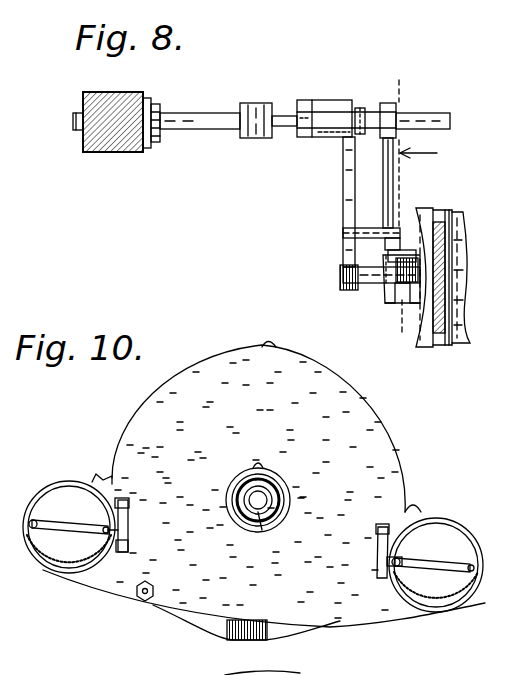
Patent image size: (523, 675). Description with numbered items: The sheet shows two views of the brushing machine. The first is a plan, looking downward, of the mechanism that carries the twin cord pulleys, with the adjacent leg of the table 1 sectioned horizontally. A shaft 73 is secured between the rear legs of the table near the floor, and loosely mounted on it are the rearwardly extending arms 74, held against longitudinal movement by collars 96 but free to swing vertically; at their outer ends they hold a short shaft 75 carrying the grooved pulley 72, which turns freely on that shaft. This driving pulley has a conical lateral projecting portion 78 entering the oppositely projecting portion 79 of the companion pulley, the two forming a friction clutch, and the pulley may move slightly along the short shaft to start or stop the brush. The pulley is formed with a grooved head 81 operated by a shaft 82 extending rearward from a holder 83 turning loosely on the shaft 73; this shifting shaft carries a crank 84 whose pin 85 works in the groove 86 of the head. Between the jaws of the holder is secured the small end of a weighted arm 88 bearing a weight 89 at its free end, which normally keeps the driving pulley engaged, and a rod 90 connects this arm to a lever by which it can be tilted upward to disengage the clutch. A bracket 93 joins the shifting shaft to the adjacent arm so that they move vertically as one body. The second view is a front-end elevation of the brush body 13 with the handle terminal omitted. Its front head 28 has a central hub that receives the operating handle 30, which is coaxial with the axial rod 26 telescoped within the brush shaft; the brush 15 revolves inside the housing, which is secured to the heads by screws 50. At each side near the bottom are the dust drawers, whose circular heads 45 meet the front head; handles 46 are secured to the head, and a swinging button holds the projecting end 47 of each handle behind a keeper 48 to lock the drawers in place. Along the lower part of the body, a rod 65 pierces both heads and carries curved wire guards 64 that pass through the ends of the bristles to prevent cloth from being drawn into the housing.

In FIG. 8, the table 1 is at (120, 92).
In FIG. 8, the shaft 73 is at (205, 115).
In FIG. 8, the weight 89 is at (262, 102).
In FIG. 8, the collar 96 is at (303, 100).
In FIG. 8, the weighted arm 88 is at (336, 118).
In FIG. 8, the rod 90 is at (359, 108).
In FIG. 8, the holder 83 is at (388, 103).
In FIG. 8, the arm 74 is at (343, 190).
In FIG. 8, the shaft 82 is at (394, 176).
In FIG. 8, the bracket 93 is at (358, 230).
In FIG. 8, the crank 84 is at (385, 244).
In FIG. 8, the pin 85 is at (388, 257).
In FIG. 8, the short shaft 75 is at (348, 277).
In FIG. 8, the groove 86 is at (384, 284).
In FIG. 8, the grooved head 81 is at (401, 314).
In FIG. 8, the grooved pulley 72 is at (452, 281).
In FIG. 8, the lateral projecting portion 78 is at (442, 222).
In FIG. 8, the oppositely projecting portion 79 is at (462, 235).
In FIG. 10, the front head 28 is at (264, 486).
In FIG. 10, the brush body 13 is at (246, 331).
In FIG. 10, the screw 50 is at (277, 347).
In FIG. 10, the axial rod 26 is at (246, 495).
In FIG. 10, the operating handle 30 is at (263, 531).
In FIG. 10, the circular head 45 is at (62, 488).
In FIG. 10, the handle 46 is at (488, 578).
In FIG. 10, the keeper 48 is at (118, 528).
In FIG. 10, the projecting end 47 is at (122, 553).
In FIG. 10, the rod 65 is at (144, 601).
In FIG. 10, the brush 15 is at (278, 627).
In FIG. 10, the guard 64 is at (233, 636).